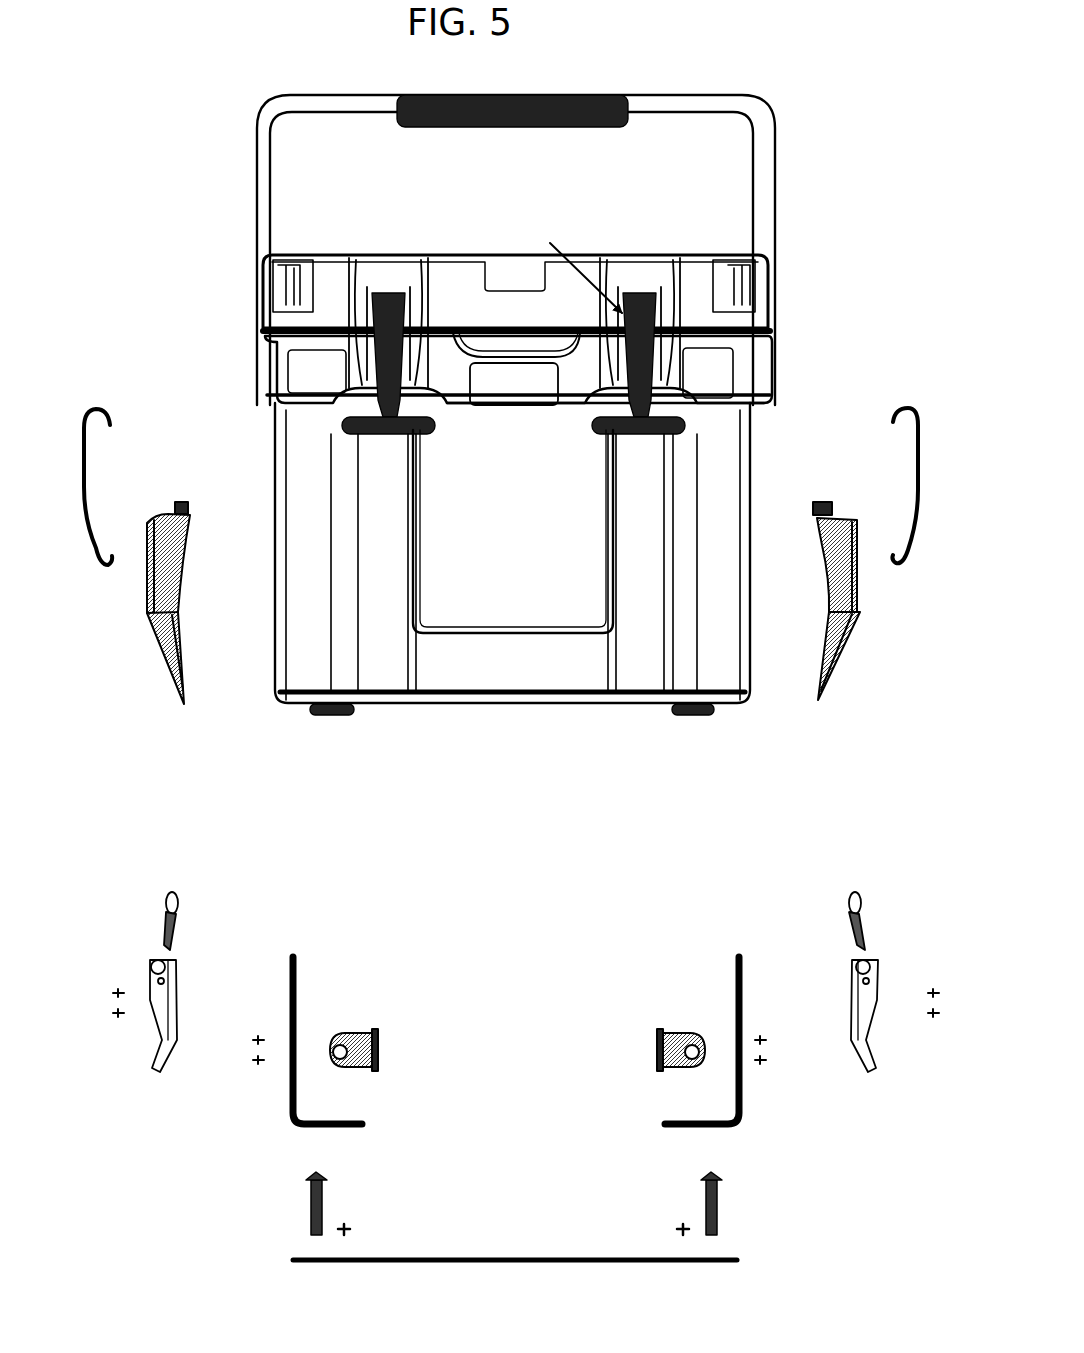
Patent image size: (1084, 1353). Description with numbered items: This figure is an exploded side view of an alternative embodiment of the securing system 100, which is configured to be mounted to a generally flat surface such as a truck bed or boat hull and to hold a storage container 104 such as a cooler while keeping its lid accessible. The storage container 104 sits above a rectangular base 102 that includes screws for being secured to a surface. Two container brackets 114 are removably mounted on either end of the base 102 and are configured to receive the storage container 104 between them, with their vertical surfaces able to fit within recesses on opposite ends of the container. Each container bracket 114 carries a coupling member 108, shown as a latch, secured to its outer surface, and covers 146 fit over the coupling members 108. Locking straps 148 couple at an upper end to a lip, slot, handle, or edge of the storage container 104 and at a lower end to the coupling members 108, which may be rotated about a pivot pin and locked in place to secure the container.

The securing system 100 is at (857, 163).
The base 102 is at (498, 1250).
The storage container 104 is at (532, 552).
The coupling member 108 is at (125, 1057).
The container bracket 114 is at (703, 993).
The cover 146 is at (137, 688).
The locking strap 148 is at (83, 387).